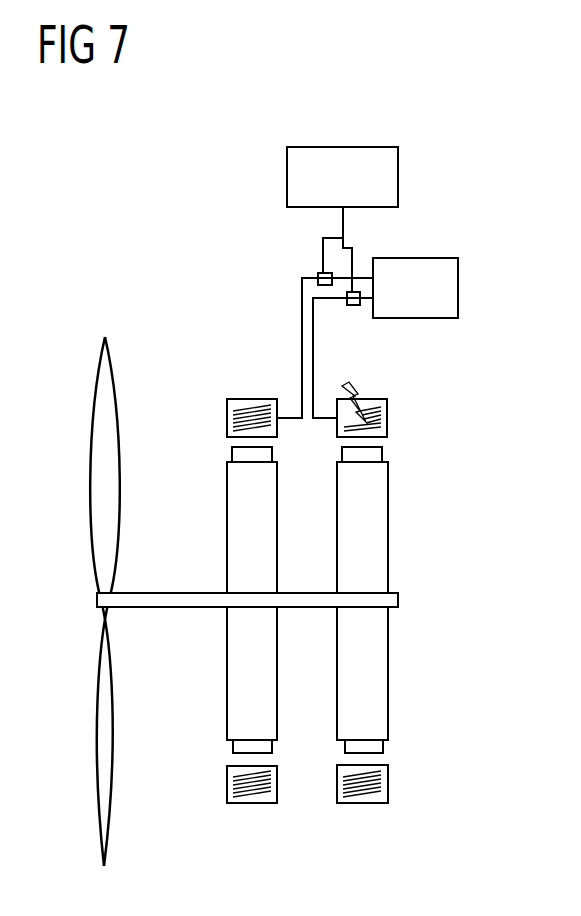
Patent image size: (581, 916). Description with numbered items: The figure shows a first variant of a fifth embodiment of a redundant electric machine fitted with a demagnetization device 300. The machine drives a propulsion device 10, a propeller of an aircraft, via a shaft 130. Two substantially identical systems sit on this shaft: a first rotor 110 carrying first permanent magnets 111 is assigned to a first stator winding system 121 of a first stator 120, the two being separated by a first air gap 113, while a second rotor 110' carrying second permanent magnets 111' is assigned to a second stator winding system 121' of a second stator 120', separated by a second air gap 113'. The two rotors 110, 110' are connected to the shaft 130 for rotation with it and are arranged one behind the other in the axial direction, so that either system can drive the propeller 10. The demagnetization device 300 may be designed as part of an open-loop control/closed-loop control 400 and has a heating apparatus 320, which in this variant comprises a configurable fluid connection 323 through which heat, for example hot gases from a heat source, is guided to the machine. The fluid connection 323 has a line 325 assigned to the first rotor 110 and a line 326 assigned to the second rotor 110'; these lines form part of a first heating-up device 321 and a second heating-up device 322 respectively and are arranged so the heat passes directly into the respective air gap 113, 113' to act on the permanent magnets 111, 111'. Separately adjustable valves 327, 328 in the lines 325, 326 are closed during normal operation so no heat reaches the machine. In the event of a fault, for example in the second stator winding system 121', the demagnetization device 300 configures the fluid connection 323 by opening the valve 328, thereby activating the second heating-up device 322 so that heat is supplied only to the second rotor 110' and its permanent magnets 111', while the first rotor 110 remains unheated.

The propulsion device 10 is at (100, 731).
The first rotor 110 is at (216, 601).
The second rotor 110' is at (403, 601).
The first permanent magnets 111 is at (216, 600).
The second permanent magnets 111' is at (402, 602).
The first air gap 113 is at (199, 616).
The second air gap 113' is at (442, 609).
The first stator 120 is at (238, 603).
The second stator 120' is at (366, 603).
The first stator winding system 121 is at (222, 581).
The second stator winding system 121' is at (426, 594).
The shaft 130 is at (400, 600).
The demagnetization device 300 is at (398, 176).
The heating apparatus 320 is at (246, 275).
The first heating-up device 321 is at (282, 315).
The second heating-up device 322 is at (372, 326).
The configurable fluid connection 323 is at (250, 315).
The line 325 is at (302, 288).
The line 326 is at (313, 320).
The valve 327 is at (306, 248).
The valve 328 is at (353, 292).
The open-loop control/closed-loop control 400 is at (458, 290).